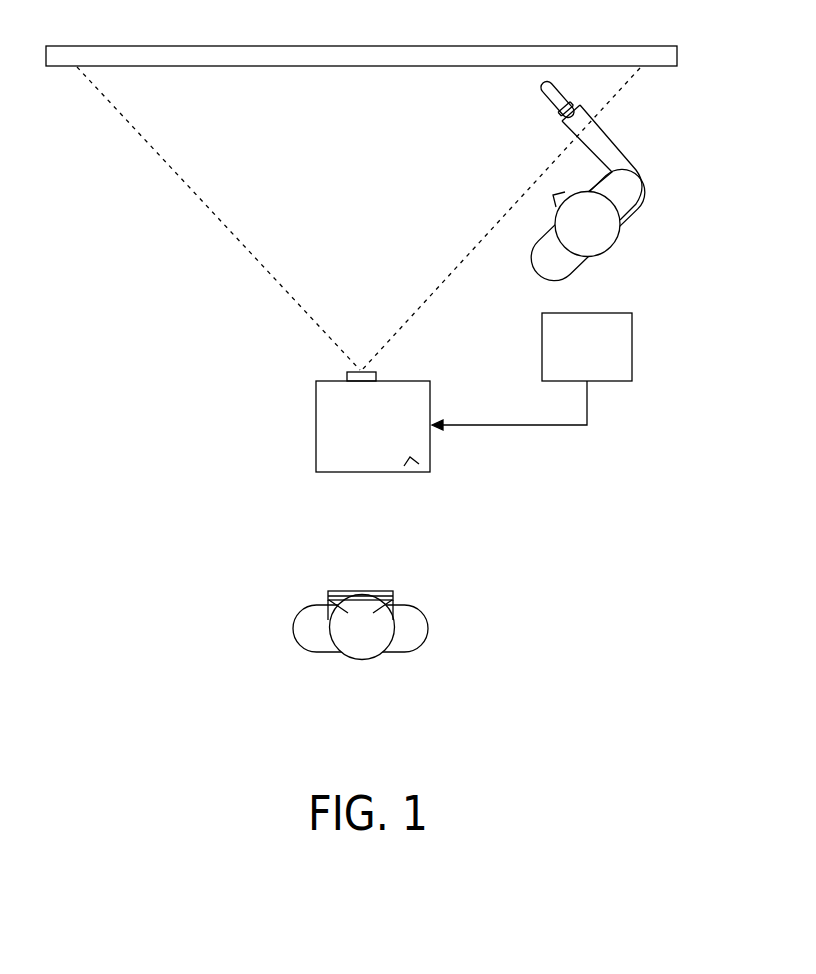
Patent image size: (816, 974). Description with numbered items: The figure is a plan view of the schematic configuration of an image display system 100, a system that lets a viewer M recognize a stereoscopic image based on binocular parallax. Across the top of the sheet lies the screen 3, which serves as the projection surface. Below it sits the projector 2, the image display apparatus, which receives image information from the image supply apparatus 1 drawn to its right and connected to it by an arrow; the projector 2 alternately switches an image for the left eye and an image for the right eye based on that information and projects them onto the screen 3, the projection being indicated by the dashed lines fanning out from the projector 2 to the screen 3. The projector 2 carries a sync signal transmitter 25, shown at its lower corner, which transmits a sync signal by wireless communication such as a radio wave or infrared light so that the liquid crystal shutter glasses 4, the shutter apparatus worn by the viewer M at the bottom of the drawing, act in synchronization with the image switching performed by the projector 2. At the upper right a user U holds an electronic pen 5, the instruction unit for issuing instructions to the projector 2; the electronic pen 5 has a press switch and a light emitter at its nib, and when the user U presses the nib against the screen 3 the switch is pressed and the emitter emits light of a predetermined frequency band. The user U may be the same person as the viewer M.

The image display system 100 is at (117, 281).
The screen 3 is at (62, 68).
The electronic pen 5 is at (548, 105).
The user U is at (643, 187).
The image supply apparatus 1 is at (623, 346).
The projector 2 is at (323, 430).
The sync signal transmitter 25 is at (408, 462).
The liquid crystal shutter glasses 4 is at (347, 588).
The viewer M is at (428, 625).